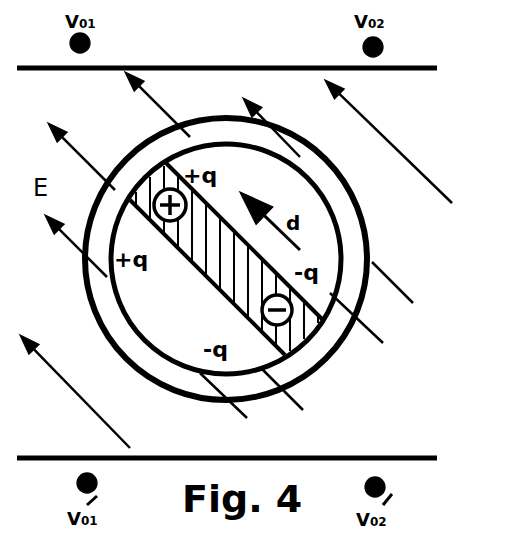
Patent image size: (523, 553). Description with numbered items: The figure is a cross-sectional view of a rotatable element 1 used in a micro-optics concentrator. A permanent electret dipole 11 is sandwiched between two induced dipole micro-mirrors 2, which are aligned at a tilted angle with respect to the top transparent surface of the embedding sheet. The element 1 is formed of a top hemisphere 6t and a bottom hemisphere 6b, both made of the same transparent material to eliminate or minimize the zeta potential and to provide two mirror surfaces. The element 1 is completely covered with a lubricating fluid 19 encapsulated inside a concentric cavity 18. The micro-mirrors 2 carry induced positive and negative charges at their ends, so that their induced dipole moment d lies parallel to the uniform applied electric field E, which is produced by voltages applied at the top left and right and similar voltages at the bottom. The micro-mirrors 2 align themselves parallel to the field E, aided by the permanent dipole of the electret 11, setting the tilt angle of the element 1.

The rotatable element 1 is at (156, 319).
The induced dipole micro-mirrors 2 is at (205, 203).
The electret dipole 11 is at (228, 284).
The top hemisphere 6t is at (330, 206).
The bottom hemisphere 6b is at (160, 340).
The annular gap 18 is at (357, 275).
The lubricating fluid 19 is at (370, 236).